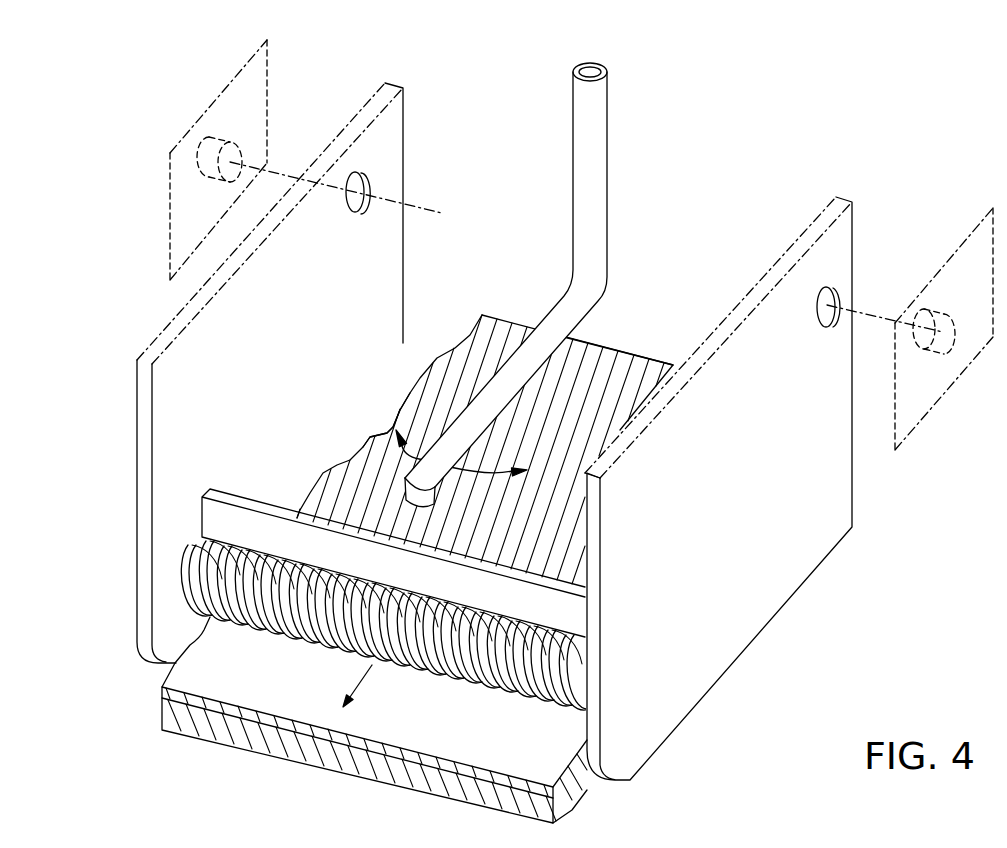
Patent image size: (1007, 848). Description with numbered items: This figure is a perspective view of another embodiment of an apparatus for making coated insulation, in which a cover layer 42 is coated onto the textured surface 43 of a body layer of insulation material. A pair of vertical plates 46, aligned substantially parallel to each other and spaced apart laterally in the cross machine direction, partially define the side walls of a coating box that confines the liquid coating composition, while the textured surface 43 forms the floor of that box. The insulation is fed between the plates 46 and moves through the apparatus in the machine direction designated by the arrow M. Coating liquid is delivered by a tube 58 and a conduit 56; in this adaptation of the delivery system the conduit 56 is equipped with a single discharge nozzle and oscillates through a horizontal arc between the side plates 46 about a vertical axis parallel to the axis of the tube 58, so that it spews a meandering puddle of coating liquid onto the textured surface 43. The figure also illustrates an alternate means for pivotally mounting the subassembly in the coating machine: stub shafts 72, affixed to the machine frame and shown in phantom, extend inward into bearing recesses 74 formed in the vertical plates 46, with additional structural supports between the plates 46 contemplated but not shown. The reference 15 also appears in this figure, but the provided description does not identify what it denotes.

The hinge edge 15 is at (387, 434).
The cover layer 42 is at (529, 736).
The textured surface 43 is at (478, 327).
The vertical plates 46 is at (827, 463).
The conduit 56 is at (600, 350).
The tube 58 is at (608, 150).
The stub shafts 72 is at (232, 142).
The bearing recesses 74 is at (357, 172).
The machine direction arrow M is at (347, 698).